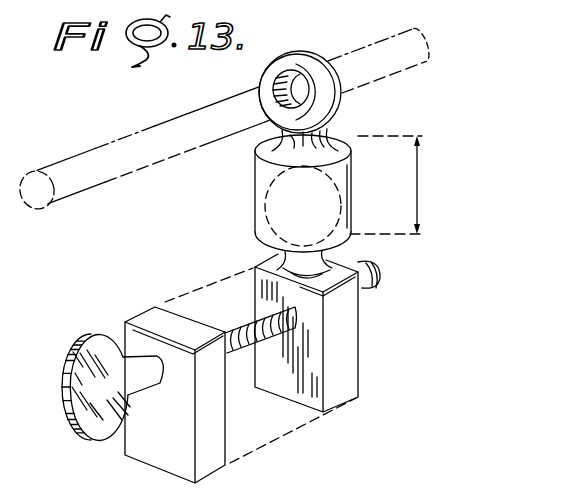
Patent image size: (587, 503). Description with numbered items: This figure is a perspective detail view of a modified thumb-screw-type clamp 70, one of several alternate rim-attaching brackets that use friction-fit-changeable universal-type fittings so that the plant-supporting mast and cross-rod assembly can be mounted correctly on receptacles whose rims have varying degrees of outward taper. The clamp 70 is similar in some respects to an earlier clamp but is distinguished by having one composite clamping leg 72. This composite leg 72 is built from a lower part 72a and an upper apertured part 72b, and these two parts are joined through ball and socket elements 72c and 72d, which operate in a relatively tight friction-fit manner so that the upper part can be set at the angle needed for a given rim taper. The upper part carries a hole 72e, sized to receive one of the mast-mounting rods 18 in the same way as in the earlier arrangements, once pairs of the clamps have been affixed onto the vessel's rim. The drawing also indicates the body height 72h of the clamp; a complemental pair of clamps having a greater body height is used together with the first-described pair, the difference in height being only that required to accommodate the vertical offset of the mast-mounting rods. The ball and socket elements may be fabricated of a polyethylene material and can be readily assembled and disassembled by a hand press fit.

The mast-mounting rod 18 is at (170, 125).
The thumb-screw-type clamp 70 is at (180, 261).
The composite clamping leg 72 is at (303, 155).
The lower part 72a is at (347, 328).
The upper apertured part 72b is at (250, 152).
The ball element 72c is at (306, 204).
The socket element 72d is at (340, 148).
The hole 72e is at (298, 88).
The body height 72h is at (386, 185).